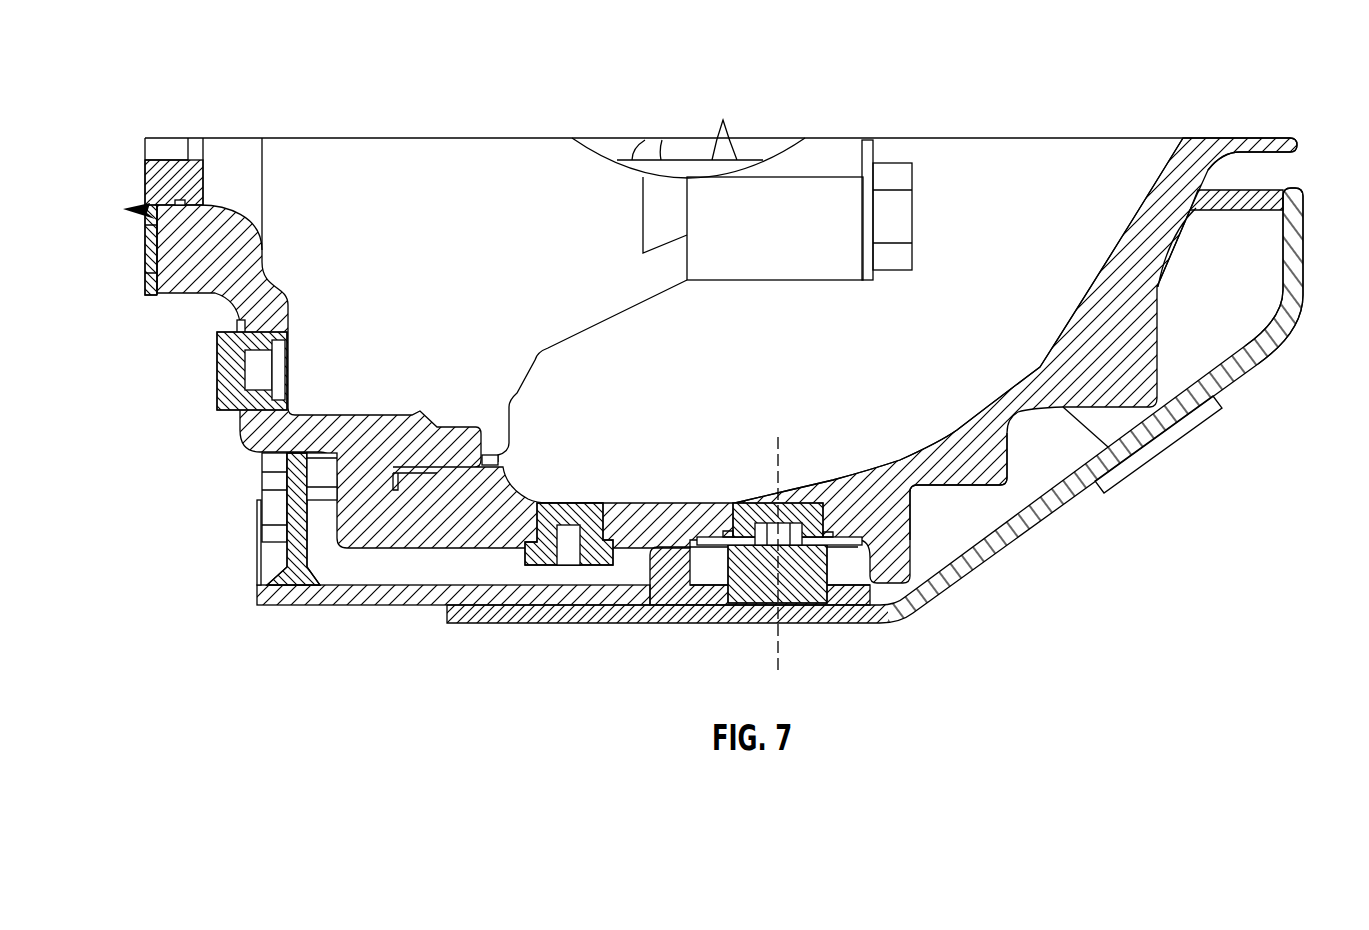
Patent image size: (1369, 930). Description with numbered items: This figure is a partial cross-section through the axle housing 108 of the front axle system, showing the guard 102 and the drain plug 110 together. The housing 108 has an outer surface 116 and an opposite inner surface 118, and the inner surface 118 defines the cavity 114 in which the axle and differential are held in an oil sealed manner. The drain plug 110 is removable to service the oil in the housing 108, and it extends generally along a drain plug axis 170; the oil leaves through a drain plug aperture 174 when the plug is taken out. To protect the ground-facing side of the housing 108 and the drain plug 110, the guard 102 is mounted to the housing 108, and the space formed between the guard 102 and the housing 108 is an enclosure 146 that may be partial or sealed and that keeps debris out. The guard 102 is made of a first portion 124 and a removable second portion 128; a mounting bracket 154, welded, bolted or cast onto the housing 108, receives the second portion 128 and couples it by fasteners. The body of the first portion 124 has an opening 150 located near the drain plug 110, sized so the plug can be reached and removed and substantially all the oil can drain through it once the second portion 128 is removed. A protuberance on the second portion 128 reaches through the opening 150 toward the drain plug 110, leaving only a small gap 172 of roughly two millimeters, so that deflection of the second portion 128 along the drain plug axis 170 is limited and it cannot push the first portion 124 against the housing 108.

The guard 102 is at (655, 658).
The axle housing 108 is at (1203, 143).
The drain plug 110 is at (805, 515).
The cavity 114 is at (1071, 160).
The outer surface 116 is at (1170, 281).
The inner surface 118 is at (1118, 256).
The first portion 124 is at (358, 600).
The second portion 128 is at (1247, 353).
The enclosure 146 is at (968, 525).
The opening 150 is at (882, 600).
The mounting bracket 154 is at (1262, 192).
The drain plug axis 170 is at (777, 458).
The gap 172 is at (912, 492).
The drain plug aperture 174 is at (722, 522).